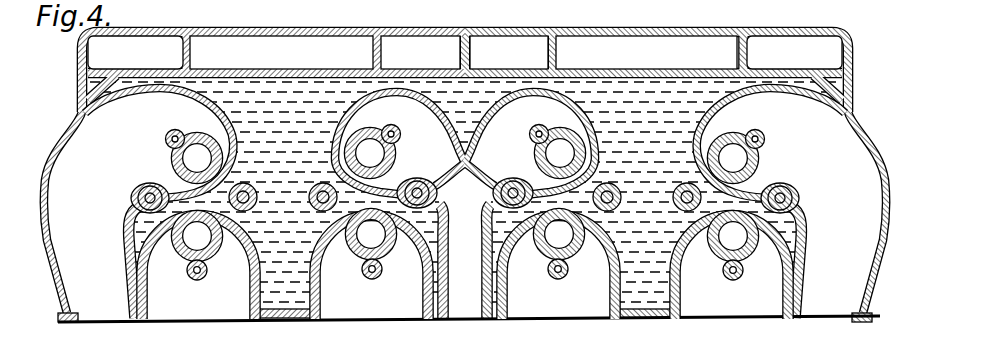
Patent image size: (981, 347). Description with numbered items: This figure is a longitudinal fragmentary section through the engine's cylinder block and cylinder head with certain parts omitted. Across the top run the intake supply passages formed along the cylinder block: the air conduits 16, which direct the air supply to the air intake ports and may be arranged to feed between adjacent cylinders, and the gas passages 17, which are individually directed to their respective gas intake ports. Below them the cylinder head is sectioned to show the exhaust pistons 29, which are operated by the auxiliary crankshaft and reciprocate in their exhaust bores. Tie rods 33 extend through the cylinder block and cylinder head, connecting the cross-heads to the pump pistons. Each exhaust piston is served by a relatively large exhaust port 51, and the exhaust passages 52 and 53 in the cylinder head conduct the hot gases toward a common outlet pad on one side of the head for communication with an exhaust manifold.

The air conduit 16 is at (463, 52).
The gas passage 17 is at (465, 52).
The exhaust piston 29 is at (178, 182).
The tie rod 33 is at (137, 197).
The exhaust port 51 is at (200, 128).
The exhaust passage 52 is at (465, 177).
The exhaust passage 53 is at (465, 269).